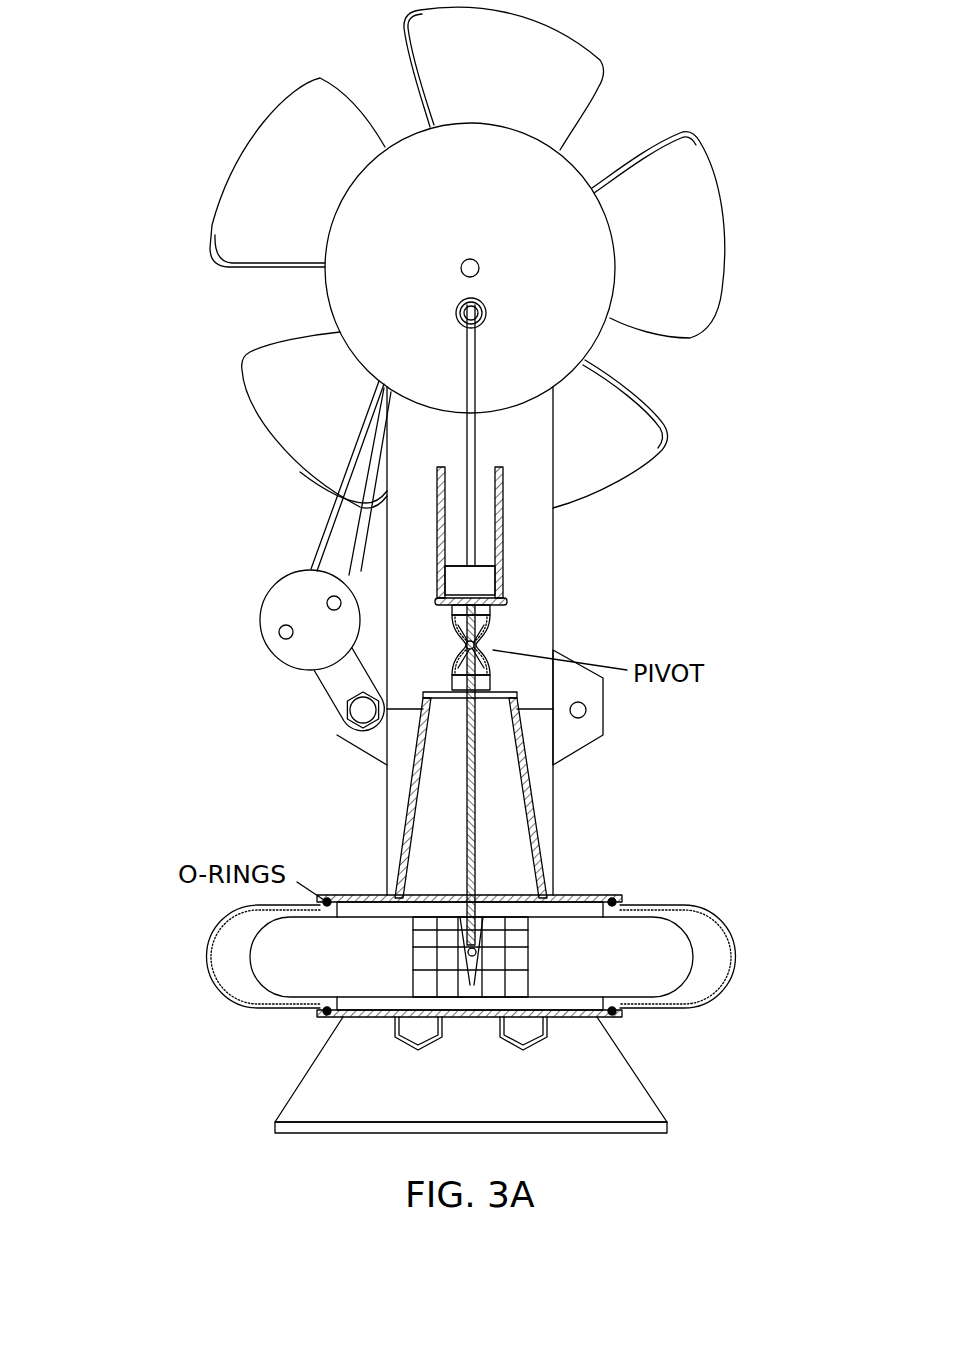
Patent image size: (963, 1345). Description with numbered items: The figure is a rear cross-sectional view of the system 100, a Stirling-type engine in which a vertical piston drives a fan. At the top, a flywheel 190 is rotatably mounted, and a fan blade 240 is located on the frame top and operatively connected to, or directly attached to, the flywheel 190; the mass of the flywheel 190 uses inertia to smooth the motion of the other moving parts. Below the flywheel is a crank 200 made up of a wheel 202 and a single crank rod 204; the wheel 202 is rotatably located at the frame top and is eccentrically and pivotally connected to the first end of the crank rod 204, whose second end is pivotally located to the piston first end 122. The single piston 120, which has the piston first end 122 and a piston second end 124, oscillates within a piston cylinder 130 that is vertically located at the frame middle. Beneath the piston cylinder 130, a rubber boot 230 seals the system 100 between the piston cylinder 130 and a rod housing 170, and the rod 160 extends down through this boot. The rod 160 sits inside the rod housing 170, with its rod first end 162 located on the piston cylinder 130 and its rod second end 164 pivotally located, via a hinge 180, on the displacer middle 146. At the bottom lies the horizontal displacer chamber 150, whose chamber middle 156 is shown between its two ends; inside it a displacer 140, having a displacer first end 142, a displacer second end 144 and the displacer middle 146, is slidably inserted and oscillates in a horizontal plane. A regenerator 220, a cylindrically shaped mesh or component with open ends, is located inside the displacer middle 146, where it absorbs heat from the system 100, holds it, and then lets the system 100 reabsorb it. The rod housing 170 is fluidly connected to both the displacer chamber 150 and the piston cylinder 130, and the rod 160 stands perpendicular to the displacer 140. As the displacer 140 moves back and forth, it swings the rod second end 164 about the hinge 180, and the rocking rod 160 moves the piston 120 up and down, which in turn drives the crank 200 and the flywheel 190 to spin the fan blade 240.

The system 100 is at (128, 112).
The fan blade 240 is at (710, 157).
The flywheel 190 is at (592, 247).
The wheel 202 is at (671, 313).
The crank 200 is at (655, 363).
The crank rod 204 is at (463, 390).
The piston first end 122 is at (447, 565).
The piston cylinder 130 is at (503, 523).
The piston 120 is at (490, 578).
The rubber boot 230 is at (492, 623).
The piston second end 124 is at (450, 605).
The rod first end 162 is at (462, 640).
The rod housing 170 is at (532, 792).
The rod 160 is at (465, 835).
The regenerator 220 is at (512, 949).
The displacer chamber 150 is at (727, 899).
The displacer second end 144 is at (253, 940).
The displacer first end 142 is at (662, 977).
The displacer 140 is at (218, 978).
The rod second end 164 is at (462, 950).
The hinge 180 is at (468, 958).
The displacer middle 146 is at (462, 945).
The chamber middle 156 is at (500, 1020).